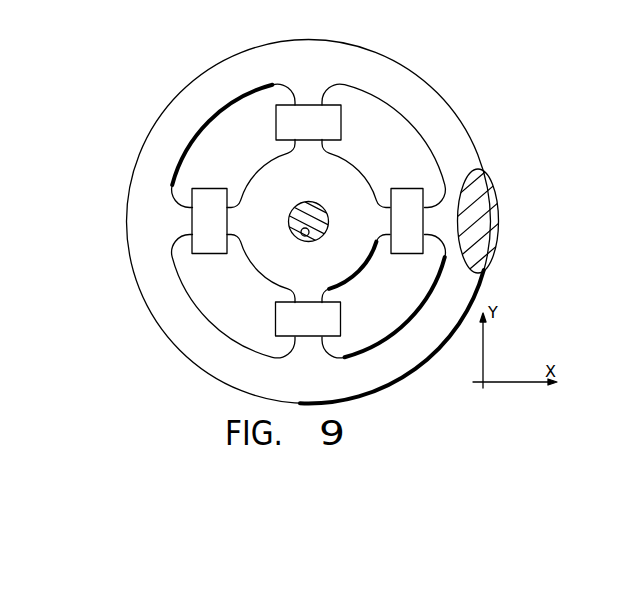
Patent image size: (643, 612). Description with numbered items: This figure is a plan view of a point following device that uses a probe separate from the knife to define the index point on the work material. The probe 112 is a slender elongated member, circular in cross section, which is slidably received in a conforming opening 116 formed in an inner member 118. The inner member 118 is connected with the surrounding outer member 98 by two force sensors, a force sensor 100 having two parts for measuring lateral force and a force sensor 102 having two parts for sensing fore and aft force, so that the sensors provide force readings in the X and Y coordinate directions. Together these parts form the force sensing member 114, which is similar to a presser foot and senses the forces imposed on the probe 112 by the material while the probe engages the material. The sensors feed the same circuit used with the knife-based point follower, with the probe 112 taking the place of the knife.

The outer member 98 is at (353, 44).
The force sensing member 114 is at (441, 95).
The force sensor 100 is at (341, 130).
The force sensor 102 is at (211, 188).
The probe 112 is at (305, 203).
The conforming opening 116 is at (300, 233).
The inner member 118 is at (369, 272).